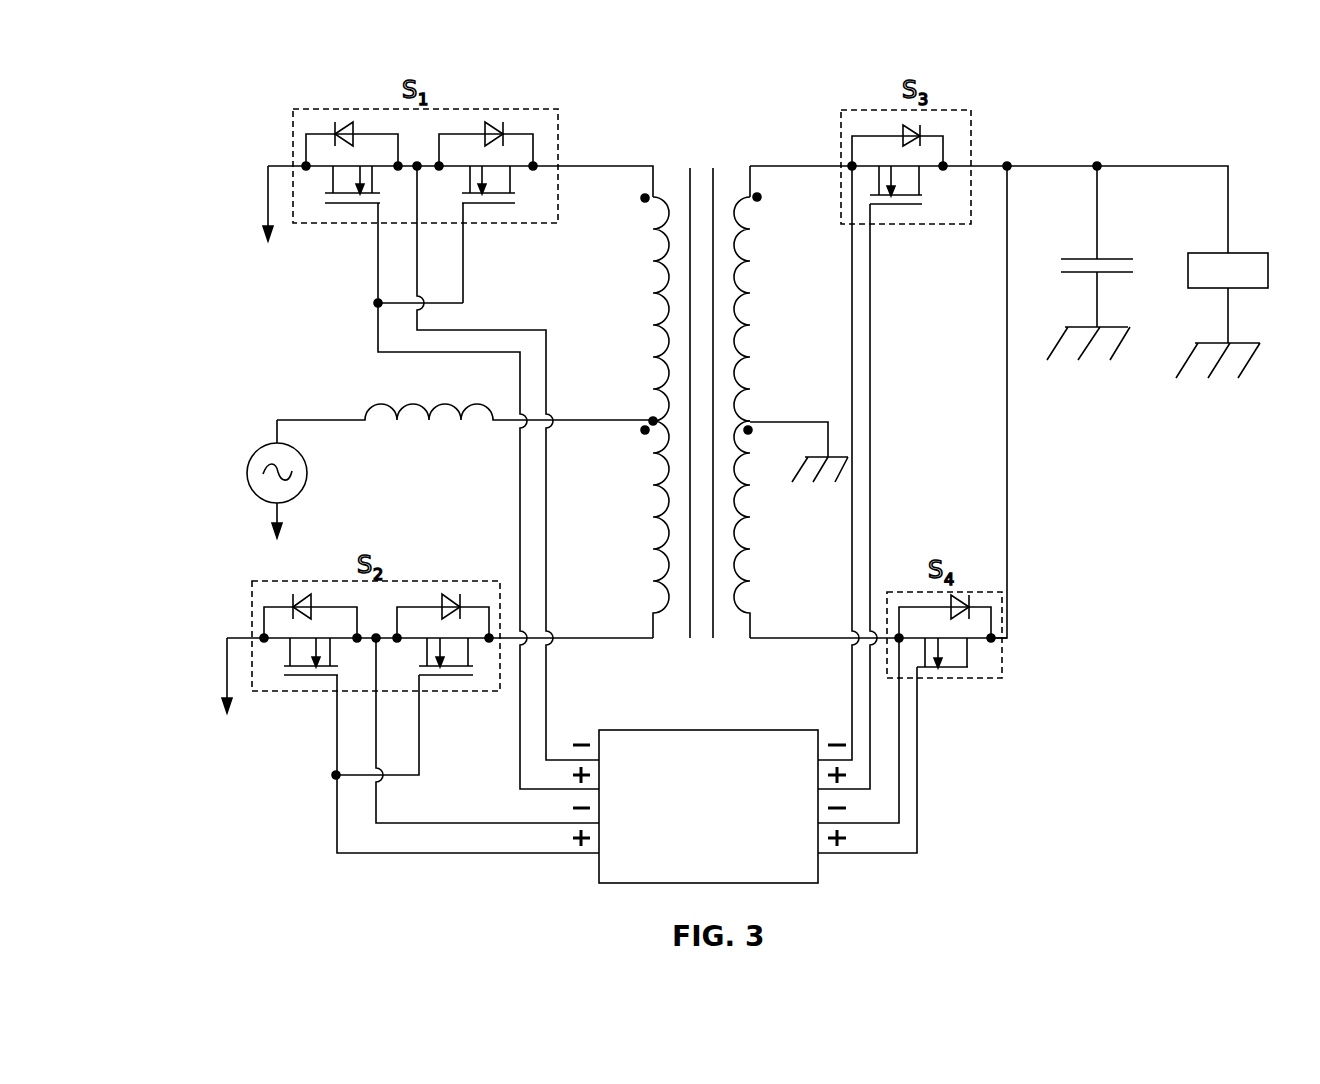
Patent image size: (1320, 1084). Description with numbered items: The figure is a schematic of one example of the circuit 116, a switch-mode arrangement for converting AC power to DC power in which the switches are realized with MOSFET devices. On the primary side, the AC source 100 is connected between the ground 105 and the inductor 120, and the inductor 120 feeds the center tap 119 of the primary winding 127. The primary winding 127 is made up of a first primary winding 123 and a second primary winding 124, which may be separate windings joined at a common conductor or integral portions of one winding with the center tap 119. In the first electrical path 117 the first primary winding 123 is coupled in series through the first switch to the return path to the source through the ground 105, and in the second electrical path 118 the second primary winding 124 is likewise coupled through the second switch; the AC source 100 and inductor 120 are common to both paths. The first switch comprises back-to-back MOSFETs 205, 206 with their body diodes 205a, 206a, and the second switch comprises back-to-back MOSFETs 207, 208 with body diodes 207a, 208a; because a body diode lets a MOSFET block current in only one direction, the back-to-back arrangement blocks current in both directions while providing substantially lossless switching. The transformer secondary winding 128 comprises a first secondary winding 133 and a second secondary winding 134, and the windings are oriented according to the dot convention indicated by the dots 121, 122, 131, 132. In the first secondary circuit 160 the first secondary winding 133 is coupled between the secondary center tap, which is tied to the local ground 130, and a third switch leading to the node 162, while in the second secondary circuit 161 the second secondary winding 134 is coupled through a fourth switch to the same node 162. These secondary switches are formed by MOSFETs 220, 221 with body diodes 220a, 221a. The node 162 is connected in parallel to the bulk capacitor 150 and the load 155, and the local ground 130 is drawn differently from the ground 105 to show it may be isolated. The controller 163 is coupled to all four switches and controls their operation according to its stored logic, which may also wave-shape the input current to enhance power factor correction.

The AC source 100 is at (247, 473).
The ground 105 is at (268, 205).
The circuit 116 is at (704, 385).
The first electrical path 117 is at (438, 475).
The second electrical path 118 is at (465, 660).
The center tap 119 is at (655, 419).
The inductor 120 is at (380, 404).
The dot 121 is at (645, 430).
The dot 122 is at (645, 198).
The first primary winding 123 is at (652, 322).
The second primary winding 124 is at (652, 548).
The primary winding 127 is at (630, 446).
The secondary winding 128 is at (777, 446).
The local ground 130 is at (818, 466).
The dot 131 is at (748, 430).
The dot 132 is at (757, 197).
The first secondary winding 133 is at (752, 322).
The second secondary winding 134 is at (752, 548).
The bulk capacitor 150 is at (1085, 258).
The load 155 is at (1212, 252).
The first secondary circuit 160 is at (885, 477).
The second secondary circuit 161 is at (885, 670).
The node 162 is at (1007, 166).
The controller 163 is at (645, 883).
The MOSFET 205 is at (330, 182).
The body diode 205a is at (310, 134).
The MOSFET 206 is at (512, 182).
The body diode 206a is at (525, 134).
The MOSFET 207 is at (288, 655).
The body diode 207a is at (270, 607).
The MOSFET 208 is at (500, 652).
The body diode 208a is at (500, 596).
The MOSFET 220 is at (918, 186).
The body diode 220a is at (933, 136).
The MOSFET 221 is at (968, 650).
The body diode 221a is at (985, 607).